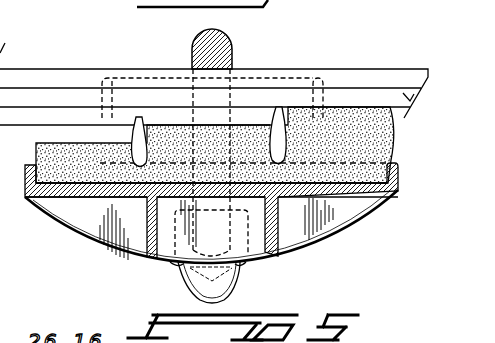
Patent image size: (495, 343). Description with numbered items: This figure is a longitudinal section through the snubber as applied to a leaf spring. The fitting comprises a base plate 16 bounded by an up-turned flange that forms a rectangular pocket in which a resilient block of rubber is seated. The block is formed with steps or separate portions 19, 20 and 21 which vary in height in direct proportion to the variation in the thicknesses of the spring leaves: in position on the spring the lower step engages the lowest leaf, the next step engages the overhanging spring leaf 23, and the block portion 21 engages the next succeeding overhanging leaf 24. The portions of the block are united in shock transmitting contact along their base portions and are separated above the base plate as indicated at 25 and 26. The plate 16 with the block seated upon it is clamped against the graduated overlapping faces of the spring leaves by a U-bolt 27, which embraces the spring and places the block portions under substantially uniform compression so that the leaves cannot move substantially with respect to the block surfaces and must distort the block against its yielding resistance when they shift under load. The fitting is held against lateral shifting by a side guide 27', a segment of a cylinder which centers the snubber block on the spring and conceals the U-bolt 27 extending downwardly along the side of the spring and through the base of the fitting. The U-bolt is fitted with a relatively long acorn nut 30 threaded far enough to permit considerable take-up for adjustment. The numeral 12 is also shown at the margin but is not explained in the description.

The base plate 12 is at (8, 128).
The base plate 16 is at (30, 183).
The step of the resilient block 19 is at (62, 145).
The step of the resilient block 20 is at (243, 117).
The block portion 21 is at (348, 122).
The overhanging spring leaf 23 is at (137, 118).
The overhanging spring leaf 24 is at (407, 110).
The separation between block portions 25 is at (157, 138).
The separation between block portions 26 is at (277, 120).
The U-bolt 27 is at (235, 42).
The side guide 27' is at (346, 65).
The acorn nut 30 is at (255, 272).